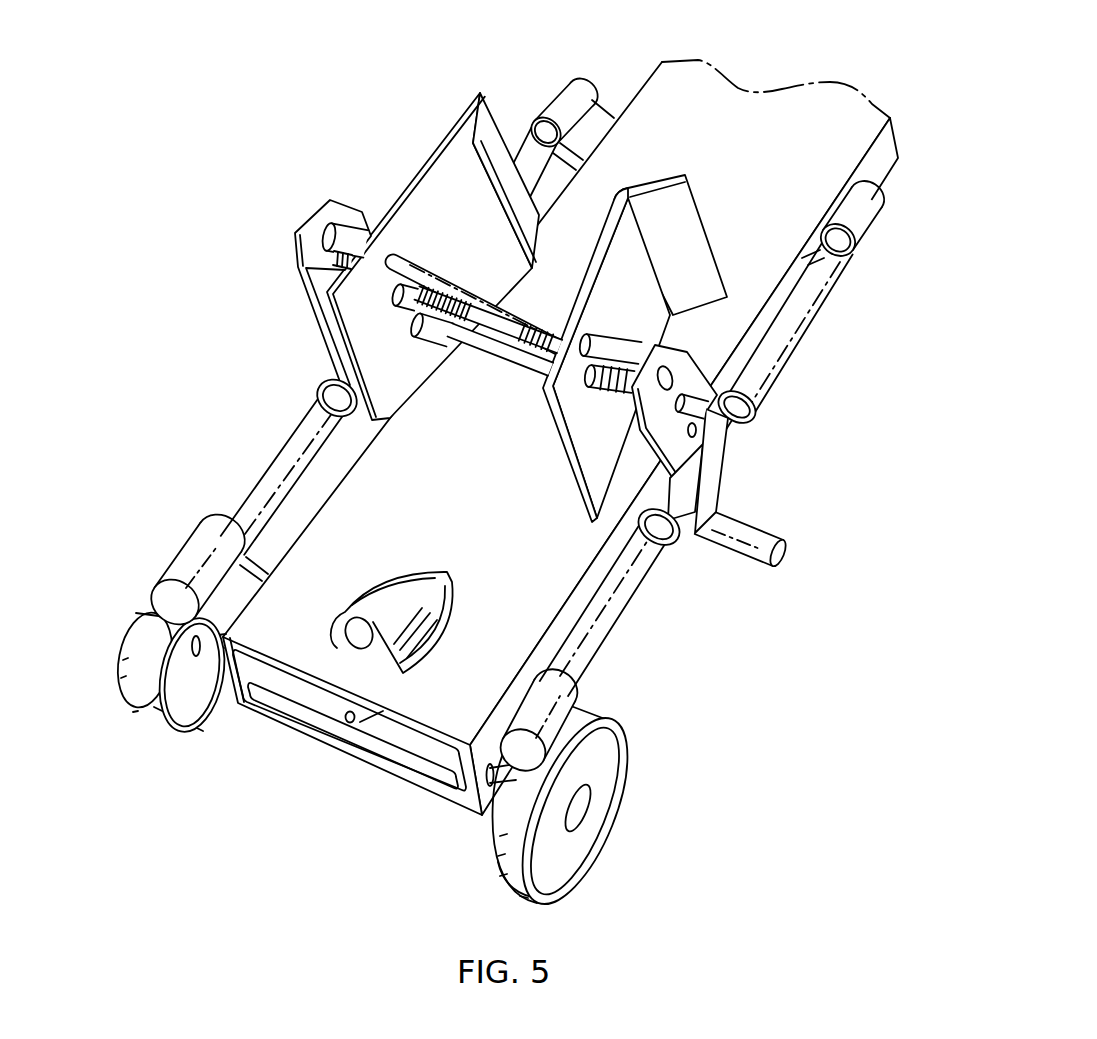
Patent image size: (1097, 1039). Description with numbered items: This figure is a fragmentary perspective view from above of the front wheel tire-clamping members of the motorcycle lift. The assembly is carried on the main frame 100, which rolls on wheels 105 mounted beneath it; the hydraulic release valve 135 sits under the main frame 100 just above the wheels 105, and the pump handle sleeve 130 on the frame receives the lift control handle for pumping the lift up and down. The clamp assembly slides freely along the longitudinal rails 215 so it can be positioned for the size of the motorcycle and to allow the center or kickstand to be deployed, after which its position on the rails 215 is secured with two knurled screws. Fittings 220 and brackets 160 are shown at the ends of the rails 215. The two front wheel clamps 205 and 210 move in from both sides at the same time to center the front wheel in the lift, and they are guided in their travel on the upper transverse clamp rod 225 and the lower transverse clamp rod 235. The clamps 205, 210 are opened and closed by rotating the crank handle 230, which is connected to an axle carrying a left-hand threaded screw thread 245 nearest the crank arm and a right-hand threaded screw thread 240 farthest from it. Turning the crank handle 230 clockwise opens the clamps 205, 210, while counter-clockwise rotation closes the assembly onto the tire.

The main frame 100 is at (707, 105).
The wheels 105 is at (152, 728).
The pump handle sleeve 130 is at (383, 582).
The release valve 135 is at (348, 719).
The mounting bracket 160 is at (323, 382).
The front wheel clamp 205 is at (473, 105).
The front wheel clamp 210 is at (700, 203).
The longitudinal rails 215 is at (268, 457).
The bushing 220 is at (556, 95).
The upper transverse clamp rod 225 is at (455, 285).
The crank handle 230 is at (740, 533).
The lower transverse clamp rod 235 is at (427, 337).
The right-hand threaded screw thread 240 is at (450, 312).
The left-hand threaded screw thread 245 is at (528, 365).